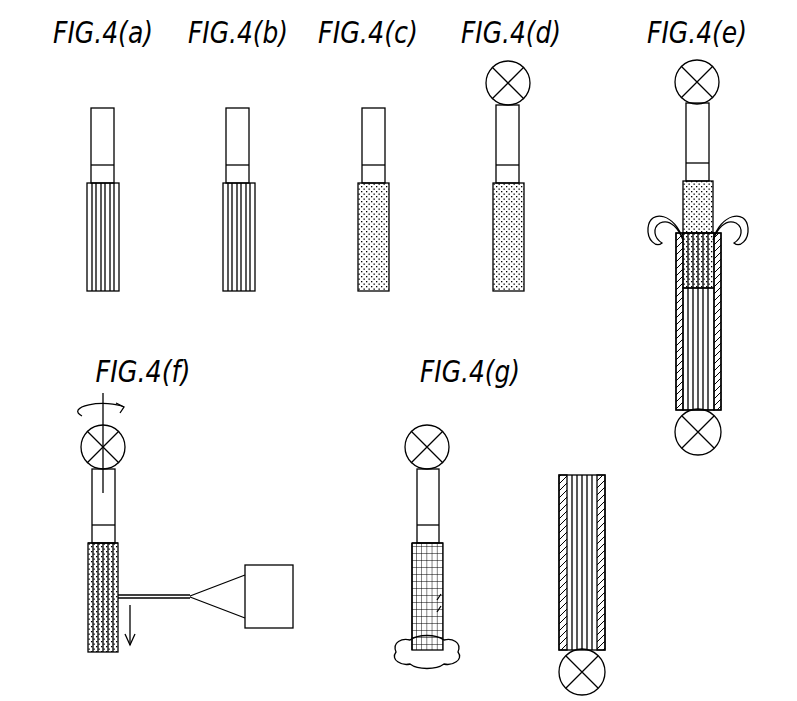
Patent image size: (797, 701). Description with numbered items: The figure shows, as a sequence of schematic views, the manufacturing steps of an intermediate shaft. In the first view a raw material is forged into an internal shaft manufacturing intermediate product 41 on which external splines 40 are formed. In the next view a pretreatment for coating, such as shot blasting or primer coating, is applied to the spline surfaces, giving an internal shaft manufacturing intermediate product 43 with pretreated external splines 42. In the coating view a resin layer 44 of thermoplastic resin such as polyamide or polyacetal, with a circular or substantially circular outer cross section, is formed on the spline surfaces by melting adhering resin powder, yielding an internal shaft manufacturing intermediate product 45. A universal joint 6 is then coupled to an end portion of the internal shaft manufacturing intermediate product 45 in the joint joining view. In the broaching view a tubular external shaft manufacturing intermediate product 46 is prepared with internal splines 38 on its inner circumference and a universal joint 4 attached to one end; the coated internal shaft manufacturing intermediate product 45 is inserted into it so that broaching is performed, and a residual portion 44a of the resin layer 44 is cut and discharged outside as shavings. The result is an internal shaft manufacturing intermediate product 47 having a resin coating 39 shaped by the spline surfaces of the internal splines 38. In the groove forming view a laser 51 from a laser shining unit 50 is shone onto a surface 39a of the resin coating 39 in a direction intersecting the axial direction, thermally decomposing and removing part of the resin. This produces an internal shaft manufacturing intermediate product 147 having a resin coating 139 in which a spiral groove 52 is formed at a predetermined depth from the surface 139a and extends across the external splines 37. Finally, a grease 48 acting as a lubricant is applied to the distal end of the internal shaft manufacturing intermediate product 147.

In FIG. 4E, the universal joint 4 is at (722, 432).
In FIG. 4G, the universal joint 4 is at (606, 672).
In FIG. 4D, the universal joint 6 is at (531, 82).
In FIG. 4E, the universal joint 6 is at (720, 81).
In FIG. 4F, the universal joint 6 is at (126, 445).
In FIG. 4G, the universal joint 6 is at (450, 445).
In FIG. 4G, the external splines 37 is at (444, 583).
In FIG. 4E, the internal splines 38 is at (689, 373).
In FIG. 4E, the resin coating 39 is at (707, 268).
In FIG. 4F, the resin coating 39 is at (92, 622).
In FIG. 4F, the surface of resin coating 39a is at (92, 565).
In FIG. 4A, the external splines 40 is at (120, 240).
In FIG. 4A, the internal shaft manufacturing intermediate product 41 is at (116, 150).
In FIG. 4B, the external splines 42 is at (256, 240).
In FIG. 4B, the internal shaft manufacturing intermediate product 43 is at (251, 150).
In FIG. 4C, the resin layer 44 is at (390, 240).
In FIG. 4D, the resin layer 44 is at (525, 240).
In FIG. 4E, the resin layer 44 is at (683, 194).
In FIG. 4E, the residual portion of resin layer 44a is at (740, 228).
In FIG. 4C, the internal shaft manufacturing intermediate product 45 is at (387, 150).
In FIG. 4D, the internal shaft manufacturing intermediate product 45 is at (521, 150).
In FIG. 4E, the internal shaft manufacturing intermediate product 45 is at (711, 150).
In FIG. 4E, the external shaft manufacturing intermediate product 46 is at (675, 318).
In FIG. 4G, the external shaft manufacturing intermediate product 46 is at (606, 522).
In FIG. 4F, the internal shaft manufacturing intermediate product 47 is at (117, 511).
In FIG. 4G, the grease 48 is at (460, 650).
In FIG. 4F, the laser shining unit 50 is at (268, 570).
In FIG. 4F, the laser 51 is at (144, 593).
In FIG. 4G, the spiral groove 52 is at (437, 614).
In FIG. 4G, the resin coating 139 is at (412, 588).
In FIG. 4G, the surface of resin coating 139a is at (412, 560).
In FIG. 4G, the internal shaft manufacturing intermediate product 147 is at (441, 510).